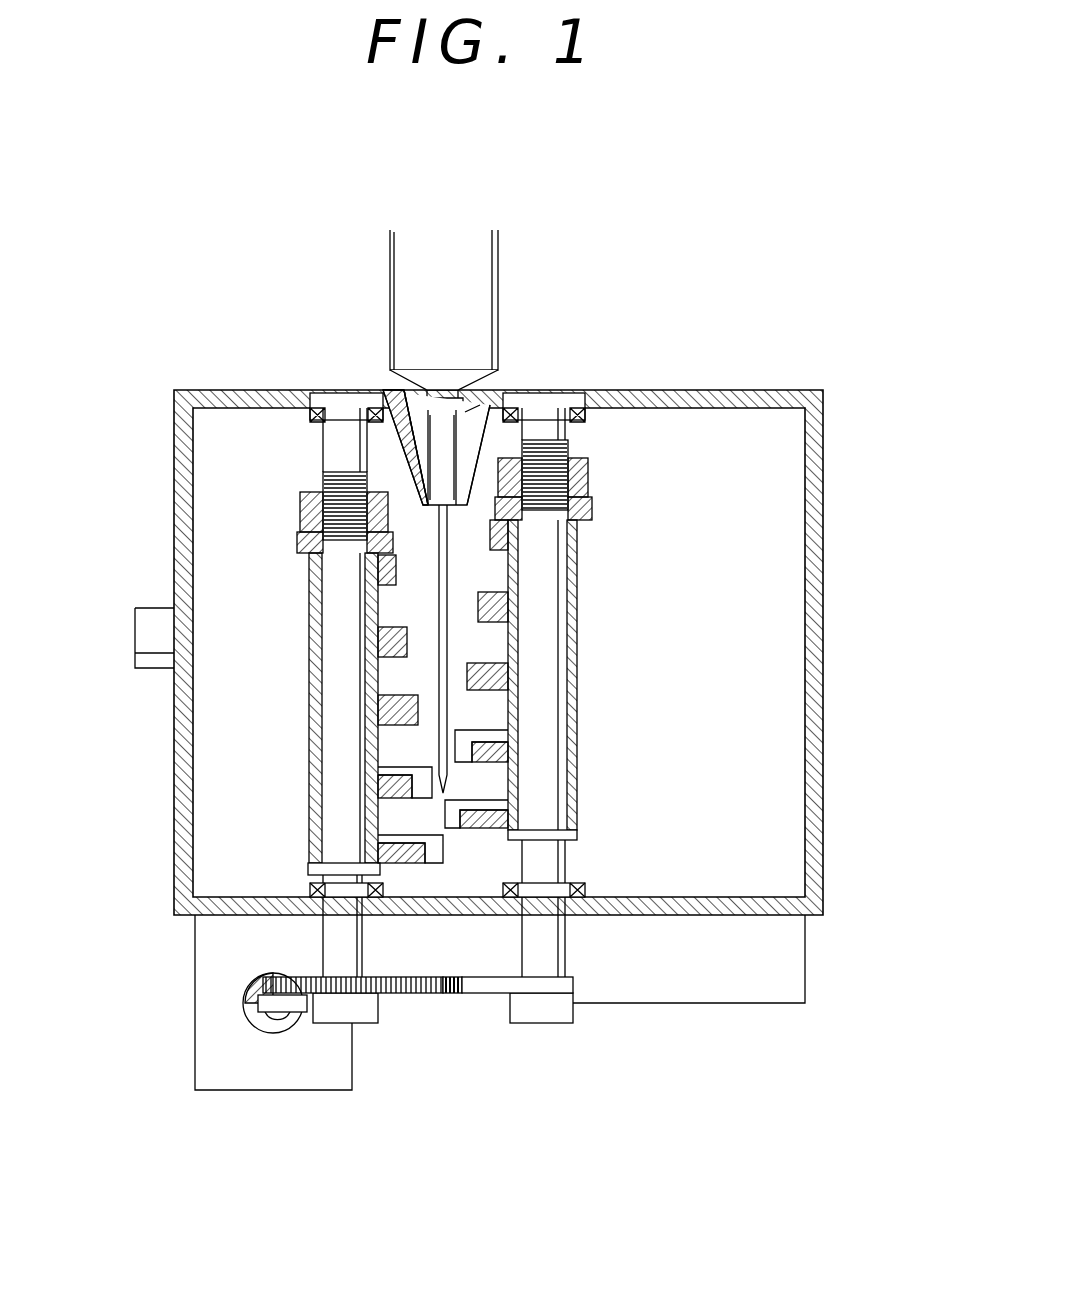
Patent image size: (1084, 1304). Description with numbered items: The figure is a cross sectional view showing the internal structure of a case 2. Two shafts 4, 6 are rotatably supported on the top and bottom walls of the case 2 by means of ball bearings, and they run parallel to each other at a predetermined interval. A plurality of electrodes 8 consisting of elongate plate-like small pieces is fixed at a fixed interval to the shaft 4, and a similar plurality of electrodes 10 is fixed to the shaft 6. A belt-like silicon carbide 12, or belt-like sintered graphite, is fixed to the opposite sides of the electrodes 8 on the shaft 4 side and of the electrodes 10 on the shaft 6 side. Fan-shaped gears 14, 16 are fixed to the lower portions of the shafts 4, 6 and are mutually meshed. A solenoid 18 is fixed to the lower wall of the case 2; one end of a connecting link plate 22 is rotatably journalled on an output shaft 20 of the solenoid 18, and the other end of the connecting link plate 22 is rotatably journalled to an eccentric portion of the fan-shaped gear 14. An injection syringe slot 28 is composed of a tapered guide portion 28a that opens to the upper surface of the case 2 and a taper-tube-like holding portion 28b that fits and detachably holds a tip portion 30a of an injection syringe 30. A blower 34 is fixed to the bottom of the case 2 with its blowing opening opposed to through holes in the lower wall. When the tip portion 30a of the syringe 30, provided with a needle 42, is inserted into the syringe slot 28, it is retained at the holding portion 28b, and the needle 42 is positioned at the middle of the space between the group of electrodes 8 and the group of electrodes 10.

The case 2 is at (733, 393).
The shaft 4 is at (343, 663).
The shaft 6 is at (550, 680).
The electrodes 8 is at (367, 637).
The electrodes 10 is at (495, 598).
The belt-like silicon carbide 12 is at (430, 798).
The fan-shaped gear 14 is at (390, 995).
The fan-shaped gear 16 is at (465, 995).
The solenoid 18 is at (212, 1075).
The output shaft 20 is at (278, 1025).
The connecting link plate 22 is at (273, 1003).
The injection syringe slot 28 is at (395, 395).
The tapered guide portion 28a is at (470, 402).
The holding portion 28b is at (518, 418).
The injection syringe 30 is at (412, 280).
The tip portion 30a is at (443, 458).
The blower 34 is at (715, 995).
The needle 42 is at (450, 640).